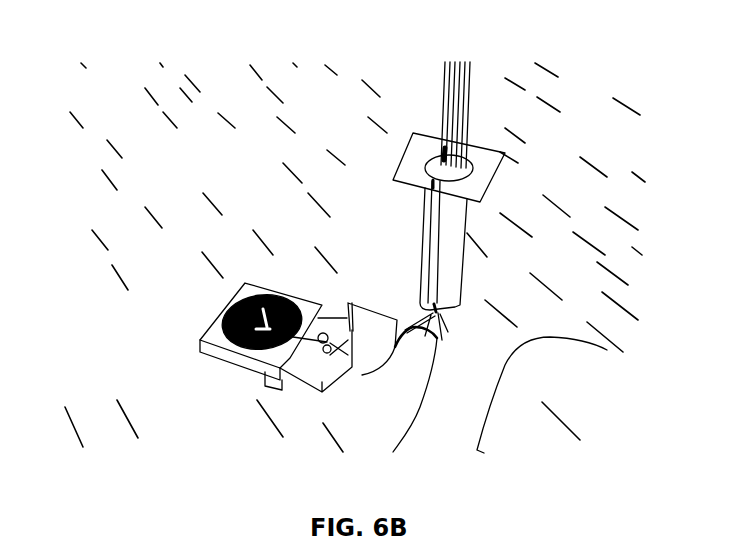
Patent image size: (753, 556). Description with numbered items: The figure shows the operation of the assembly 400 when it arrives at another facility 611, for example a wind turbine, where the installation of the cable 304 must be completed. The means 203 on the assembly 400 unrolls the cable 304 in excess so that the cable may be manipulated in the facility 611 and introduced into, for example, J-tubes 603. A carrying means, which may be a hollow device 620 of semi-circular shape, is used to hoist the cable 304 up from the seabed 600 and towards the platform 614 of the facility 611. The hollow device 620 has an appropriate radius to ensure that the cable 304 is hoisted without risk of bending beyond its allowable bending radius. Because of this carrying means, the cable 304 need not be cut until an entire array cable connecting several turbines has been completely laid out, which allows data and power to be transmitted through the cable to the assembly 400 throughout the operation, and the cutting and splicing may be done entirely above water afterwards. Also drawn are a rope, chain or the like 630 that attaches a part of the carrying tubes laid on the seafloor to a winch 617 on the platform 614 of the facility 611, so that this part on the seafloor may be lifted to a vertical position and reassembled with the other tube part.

The seabed 600 is at (118, 100).
The rope, chain or the like 630 is at (412, 238).
The winch 617 is at (415, 174).
The platform 614 is at (488, 183).
The facility 611 is at (470, 230).
The J-tubes 603 is at (451, 309).
The assembly 400 is at (180, 344).
The means 203 is at (372, 330).
The hollow device 620 is at (452, 353).
The cable 304 is at (568, 352).